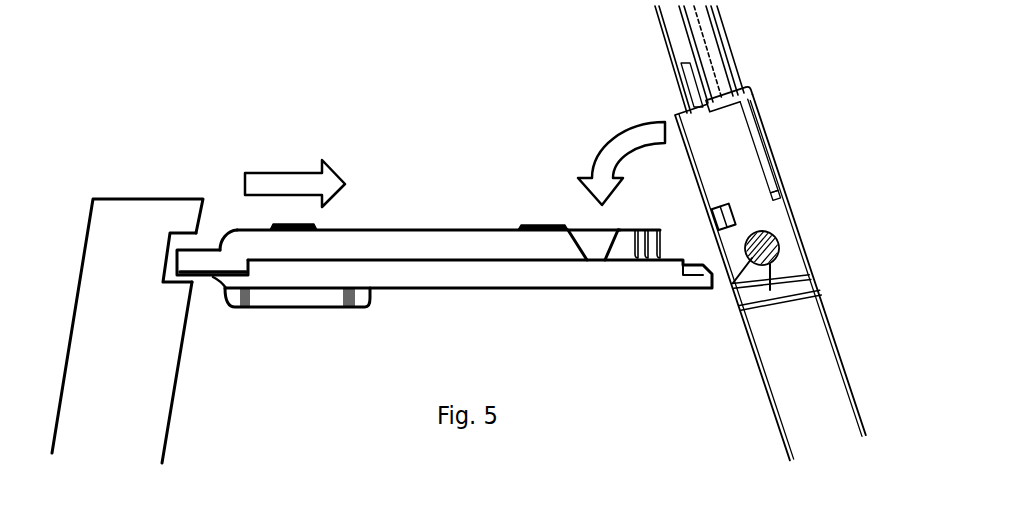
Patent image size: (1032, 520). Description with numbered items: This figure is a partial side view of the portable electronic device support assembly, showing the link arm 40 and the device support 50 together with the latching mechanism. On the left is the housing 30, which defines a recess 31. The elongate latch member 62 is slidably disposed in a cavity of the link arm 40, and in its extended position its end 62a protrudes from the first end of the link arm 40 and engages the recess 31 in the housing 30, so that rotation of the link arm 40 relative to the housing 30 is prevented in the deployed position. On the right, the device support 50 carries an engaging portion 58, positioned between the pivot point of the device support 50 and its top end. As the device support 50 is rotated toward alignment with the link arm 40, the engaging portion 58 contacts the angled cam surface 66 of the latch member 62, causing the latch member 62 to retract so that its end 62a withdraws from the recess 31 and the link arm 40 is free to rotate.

The housing 30 is at (97, 257).
The recess 31 is at (167, 250).
The latch member 62 is at (435, 242).
The end of the latch member 62a is at (192, 262).
The link arm 40 is at (505, 278).
The cam surface 66 is at (618, 260).
The engaging portion 58 is at (755, 100).
The device support 50 is at (823, 313).